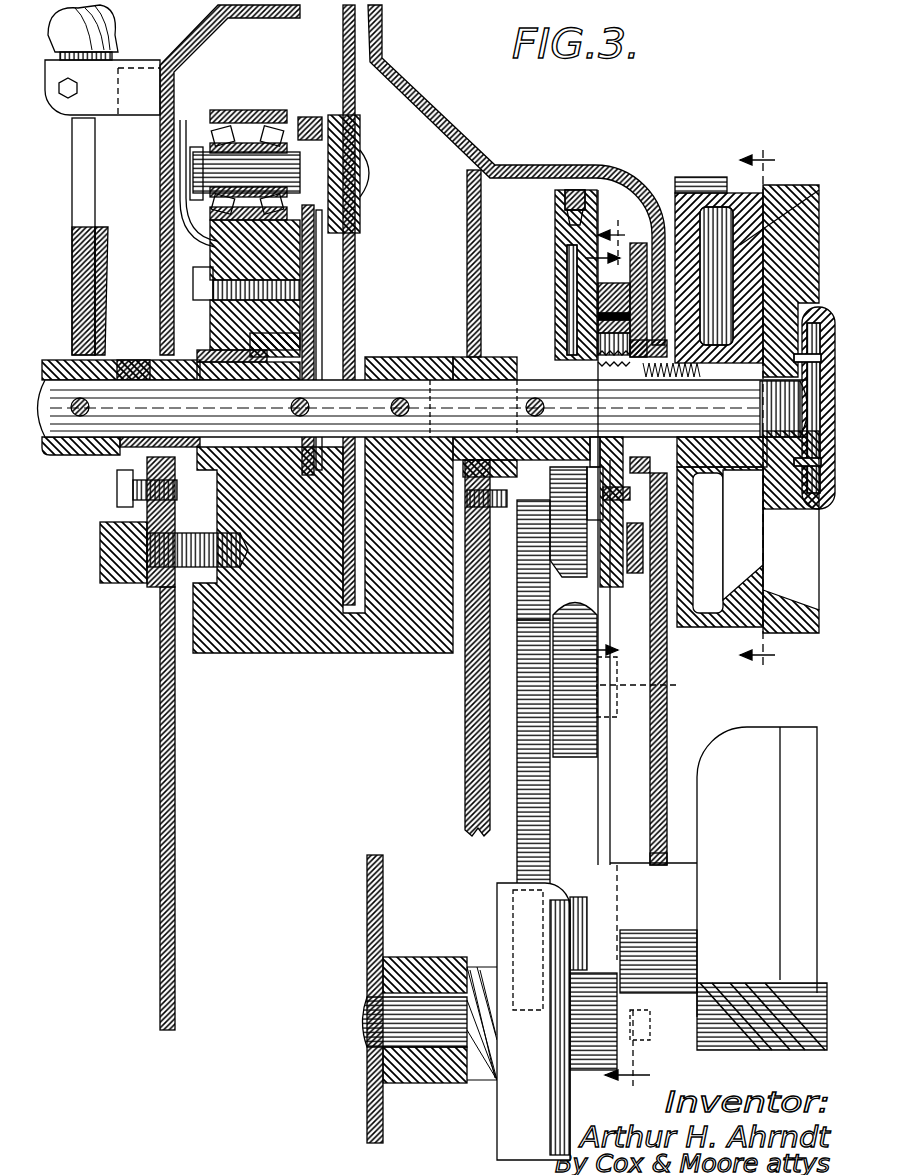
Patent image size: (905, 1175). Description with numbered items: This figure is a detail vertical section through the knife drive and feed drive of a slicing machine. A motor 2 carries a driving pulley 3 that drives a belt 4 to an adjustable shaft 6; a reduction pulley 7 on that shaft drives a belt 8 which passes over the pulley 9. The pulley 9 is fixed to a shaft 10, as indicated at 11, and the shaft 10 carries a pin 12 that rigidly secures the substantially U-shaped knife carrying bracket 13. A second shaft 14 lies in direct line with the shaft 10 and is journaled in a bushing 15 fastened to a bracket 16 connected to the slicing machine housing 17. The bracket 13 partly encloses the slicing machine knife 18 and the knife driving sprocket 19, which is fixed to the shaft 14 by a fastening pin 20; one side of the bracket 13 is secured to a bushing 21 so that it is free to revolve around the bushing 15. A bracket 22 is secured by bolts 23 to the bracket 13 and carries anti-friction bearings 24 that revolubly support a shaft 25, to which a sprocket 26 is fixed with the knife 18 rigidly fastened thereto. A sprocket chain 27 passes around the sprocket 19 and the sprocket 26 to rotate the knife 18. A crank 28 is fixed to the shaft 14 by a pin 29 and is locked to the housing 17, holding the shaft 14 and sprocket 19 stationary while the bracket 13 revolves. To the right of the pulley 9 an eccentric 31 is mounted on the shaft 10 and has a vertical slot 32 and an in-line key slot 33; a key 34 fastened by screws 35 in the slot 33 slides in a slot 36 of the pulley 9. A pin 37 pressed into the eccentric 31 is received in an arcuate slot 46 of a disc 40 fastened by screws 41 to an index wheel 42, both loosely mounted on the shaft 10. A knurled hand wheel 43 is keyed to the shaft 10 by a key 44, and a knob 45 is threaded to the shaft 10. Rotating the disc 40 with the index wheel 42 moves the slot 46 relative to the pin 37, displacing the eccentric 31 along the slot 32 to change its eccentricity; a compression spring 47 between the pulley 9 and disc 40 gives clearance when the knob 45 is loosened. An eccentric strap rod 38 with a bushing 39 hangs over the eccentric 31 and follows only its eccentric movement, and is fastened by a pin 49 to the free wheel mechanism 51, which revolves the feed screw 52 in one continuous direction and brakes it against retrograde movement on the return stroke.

The motor 2 is at (750, 740).
The driving pulley 3 is at (517, 857).
The belt 4 is at (635, 646).
The adjustable shaft 6 is at (631, 468).
The reduction pulley 7 is at (576, 782).
The belt 8 is at (575, 205).
The pulley 9 is at (560, 230).
The shaft 10 is at (380, 385).
The fixing of pulley to shaft 11 is at (534, 398).
The pin 12 is at (405, 400).
The knife carrying bracket 13 is at (412, 655).
The second shaft 14 is at (60, 385).
The bushing 15 is at (130, 378).
The bracket 16 is at (156, 383).
The slicing machine housing 17 is at (497, 175).
The slicing machine knife 18 is at (345, 35).
The knife driving sprocket 19 is at (316, 304).
The fastening pin 20 is at (305, 385).
The bushing 21 is at (205, 365).
The bracket 22 is at (290, 248).
The bolts 23 is at (198, 290).
The anti-friction bearings 24 is at (265, 128).
The shaft 25 is at (240, 160).
The sprocket 26 is at (320, 137).
The sprocket chain 27 is at (322, 268).
The crank 28 is at (82, 192).
The pin 29 is at (82, 418).
The eccentric 31 is at (598, 317).
The vertical slot 32 is at (600, 365).
The key slot 33 is at (596, 440).
The key 34 is at (590, 492).
The screws 35 is at (530, 555).
The slot 36 is at (600, 485).
The pin 37 is at (650, 485).
The eccentric strap rod 38 is at (597, 293).
The bushing 39 is at (598, 305).
The disc 40 is at (640, 245).
The screws 41 is at (720, 382).
The index wheel 42 is at (695, 178).
The knurled hand wheel 43 is at (808, 182).
The key 44 is at (740, 395).
The knob 45 is at (806, 332).
The arcuate slot 46 is at (652, 502).
The compression spring 47 is at (632, 370).
The pin 49 is at (645, 1032).
The free wheel mechanism 51 is at (496, 900).
The feed screw 52 is at (722, 985).